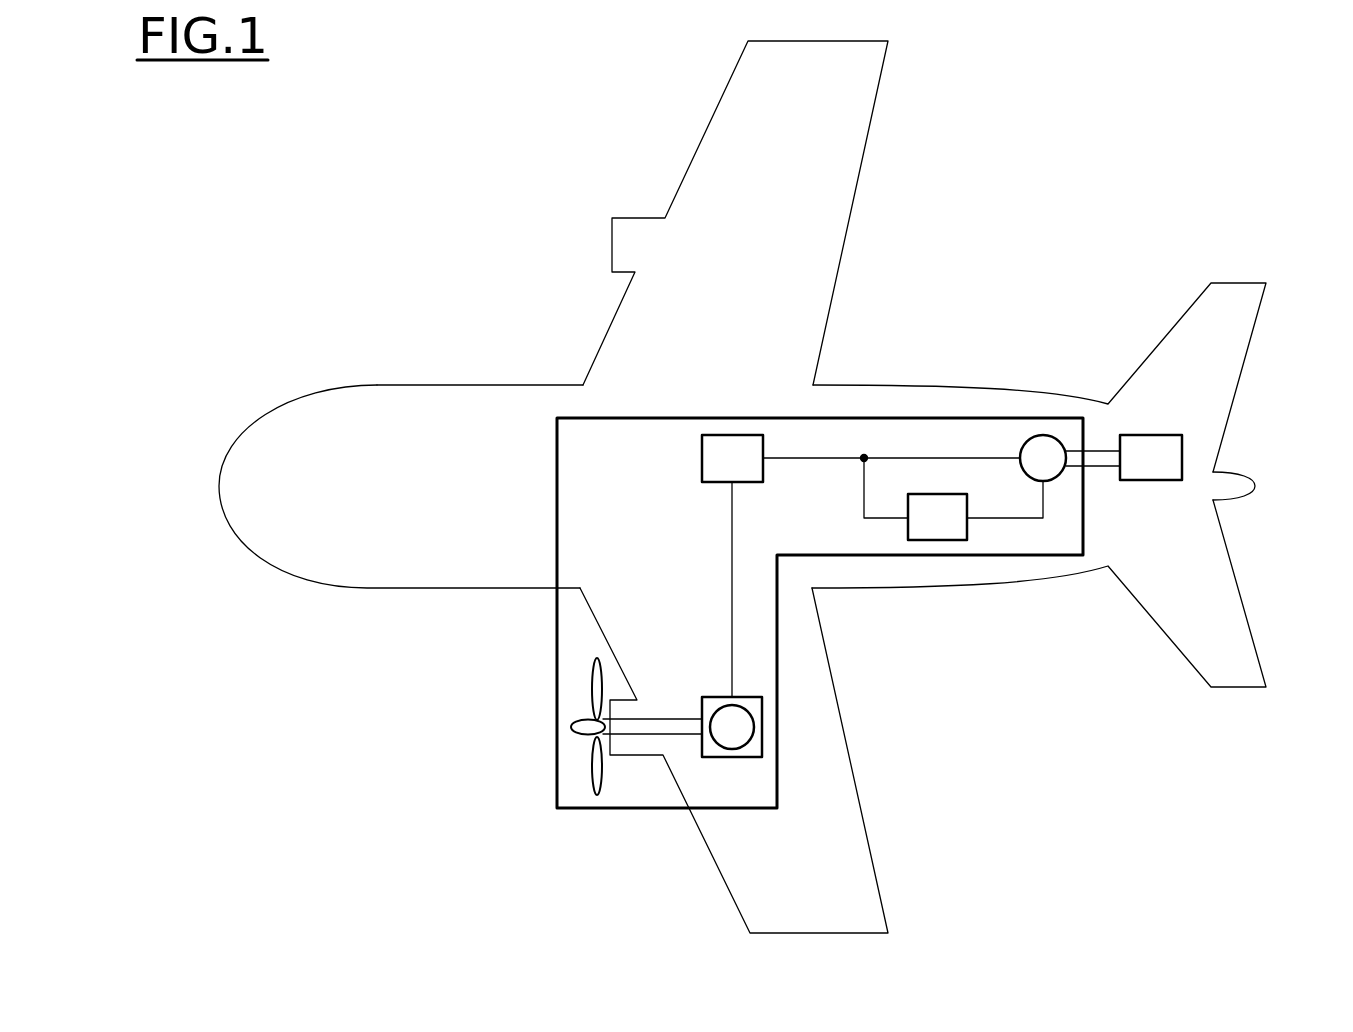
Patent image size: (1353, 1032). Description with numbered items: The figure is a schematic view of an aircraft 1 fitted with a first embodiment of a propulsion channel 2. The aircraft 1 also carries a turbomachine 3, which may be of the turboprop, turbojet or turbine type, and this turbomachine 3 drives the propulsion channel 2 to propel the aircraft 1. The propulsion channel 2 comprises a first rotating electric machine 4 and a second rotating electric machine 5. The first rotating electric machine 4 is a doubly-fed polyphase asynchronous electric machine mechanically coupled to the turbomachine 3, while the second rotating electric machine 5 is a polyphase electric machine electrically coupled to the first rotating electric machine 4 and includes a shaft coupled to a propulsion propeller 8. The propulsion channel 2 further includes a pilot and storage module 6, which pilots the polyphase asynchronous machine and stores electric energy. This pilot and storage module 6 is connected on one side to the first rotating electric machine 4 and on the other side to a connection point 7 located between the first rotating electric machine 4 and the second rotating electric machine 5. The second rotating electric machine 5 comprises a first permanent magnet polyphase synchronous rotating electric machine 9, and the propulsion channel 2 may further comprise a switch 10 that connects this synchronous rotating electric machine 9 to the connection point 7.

The aircraft 1 is at (476, 378).
The propulsion channel 2 is at (665, 810).
The turbomachine 3 is at (1151, 457).
The first rotating electric machine 4 is at (1043, 458).
The second rotating electric machine 5 is at (765, 727).
The pilot and storage module 6 is at (937, 517).
The connection point 7 is at (856, 464).
The propulsion propeller 8 is at (572, 749).
The first permanent magnet polyphase synchronous rotating electric machine 9 is at (732, 727).
The switch 10 is at (732, 458).